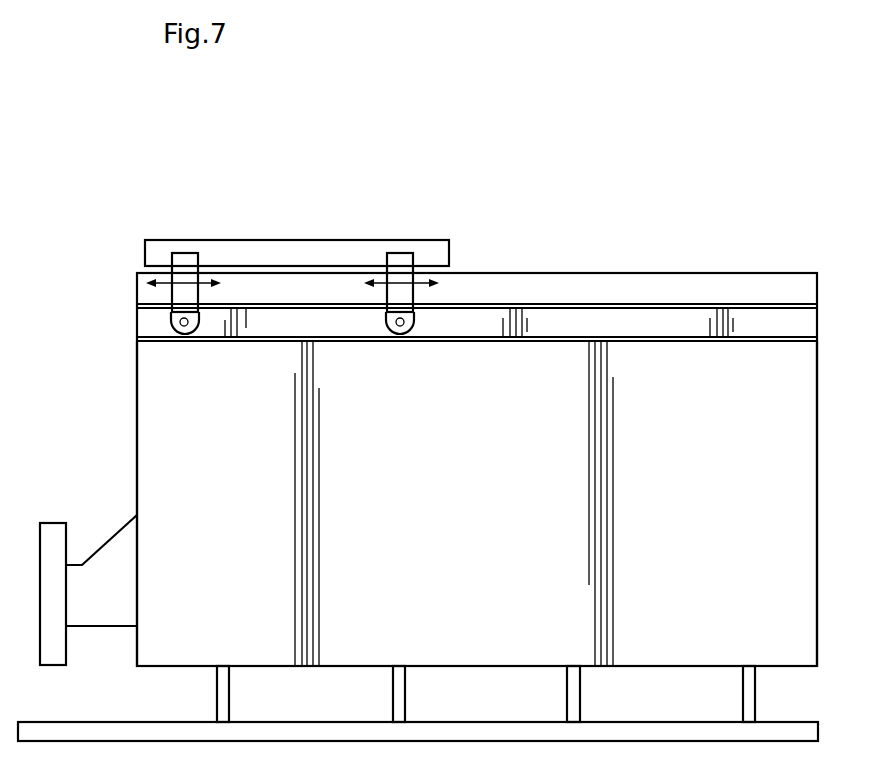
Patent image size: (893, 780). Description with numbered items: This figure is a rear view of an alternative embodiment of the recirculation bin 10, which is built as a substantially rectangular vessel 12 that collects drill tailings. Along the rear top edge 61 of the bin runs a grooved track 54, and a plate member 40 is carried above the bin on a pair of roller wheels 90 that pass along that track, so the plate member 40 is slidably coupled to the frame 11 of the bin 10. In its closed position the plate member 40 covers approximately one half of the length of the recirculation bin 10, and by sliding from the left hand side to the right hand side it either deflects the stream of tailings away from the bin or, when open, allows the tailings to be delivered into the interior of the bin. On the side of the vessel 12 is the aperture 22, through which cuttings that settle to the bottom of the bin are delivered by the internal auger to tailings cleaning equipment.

The recirculation bin 10 is at (100, 252).
The frame 11 is at (229, 692).
The vessel 12 is at (137, 413).
The aperture 22 is at (40, 562).
The plate member 40 is at (292, 245).
The grooved track 54 is at (464, 327).
The rear top edge 61 is at (513, 272).
The roller wheels 90 is at (187, 328).